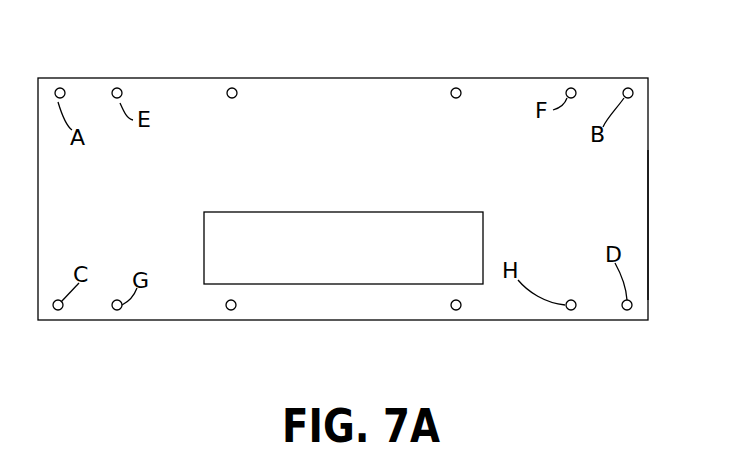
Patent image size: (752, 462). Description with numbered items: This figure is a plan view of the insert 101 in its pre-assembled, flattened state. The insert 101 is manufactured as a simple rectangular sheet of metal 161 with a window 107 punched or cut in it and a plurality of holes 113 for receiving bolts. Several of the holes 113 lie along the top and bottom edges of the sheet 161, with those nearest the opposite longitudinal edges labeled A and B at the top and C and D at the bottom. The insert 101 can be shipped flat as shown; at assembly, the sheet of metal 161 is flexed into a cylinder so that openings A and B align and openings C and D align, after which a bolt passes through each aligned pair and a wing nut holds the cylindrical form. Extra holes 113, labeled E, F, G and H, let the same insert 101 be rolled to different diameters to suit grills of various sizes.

The insert 101 is at (518, 320).
The window 107 is at (357, 230).
The holes 113 is at (60, 88).
The sheet of metal 161 is at (630, 227).